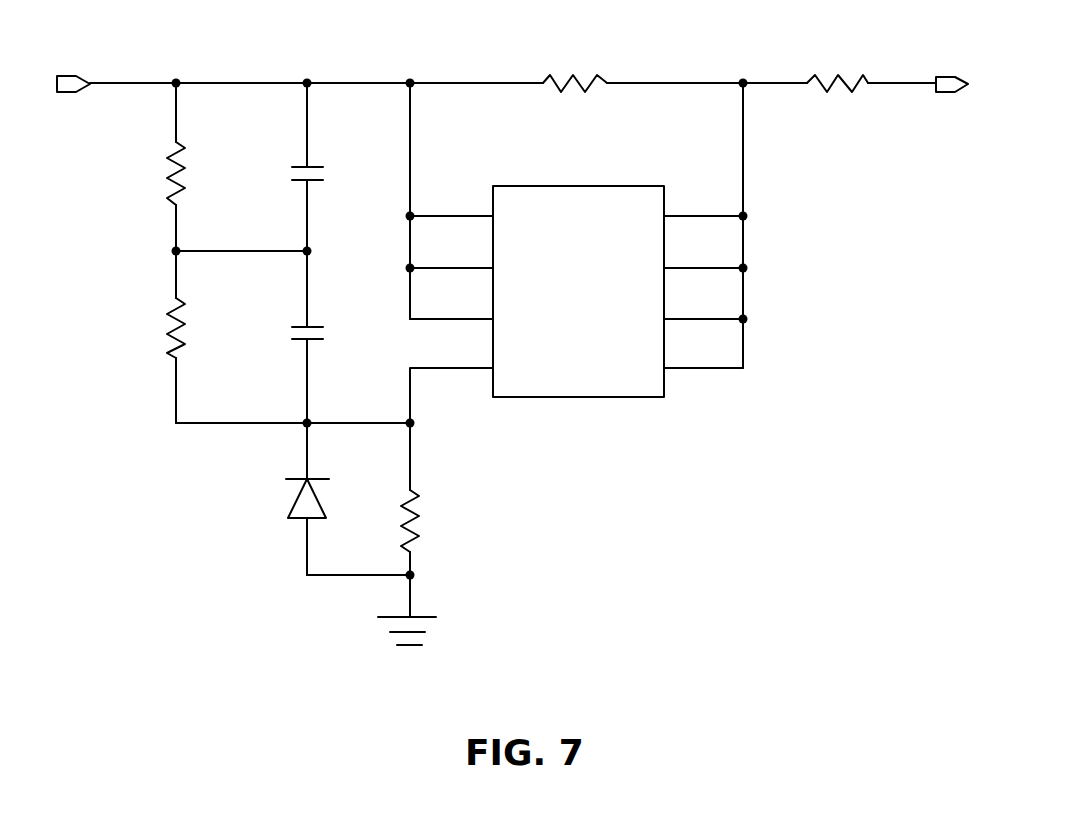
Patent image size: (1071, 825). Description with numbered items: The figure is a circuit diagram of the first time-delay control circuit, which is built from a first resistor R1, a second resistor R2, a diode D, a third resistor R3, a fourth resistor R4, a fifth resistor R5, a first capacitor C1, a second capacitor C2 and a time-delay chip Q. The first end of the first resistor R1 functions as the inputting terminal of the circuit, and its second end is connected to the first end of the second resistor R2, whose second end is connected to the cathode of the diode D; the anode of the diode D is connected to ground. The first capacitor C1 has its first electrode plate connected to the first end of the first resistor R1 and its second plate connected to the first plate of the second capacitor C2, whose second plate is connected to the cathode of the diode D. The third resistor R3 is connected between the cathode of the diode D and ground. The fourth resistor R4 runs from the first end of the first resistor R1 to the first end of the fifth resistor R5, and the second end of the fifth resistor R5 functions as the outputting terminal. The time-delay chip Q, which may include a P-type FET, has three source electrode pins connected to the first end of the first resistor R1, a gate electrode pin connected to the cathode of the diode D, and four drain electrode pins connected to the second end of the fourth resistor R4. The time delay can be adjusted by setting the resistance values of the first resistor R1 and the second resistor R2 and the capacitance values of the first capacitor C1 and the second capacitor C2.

The first resistor R1 is at (156, 173).
The second resistor R2 is at (156, 328).
The third resistor R3 is at (440, 521).
The fourth resistor R4 is at (575, 66).
The fifth resistor R5 is at (837, 66).
The first capacitor C1 is at (323, 160).
The second capacitor C2 is at (323, 316).
The diode D is at (292, 498).
The time-delay chip Q is at (578, 274).